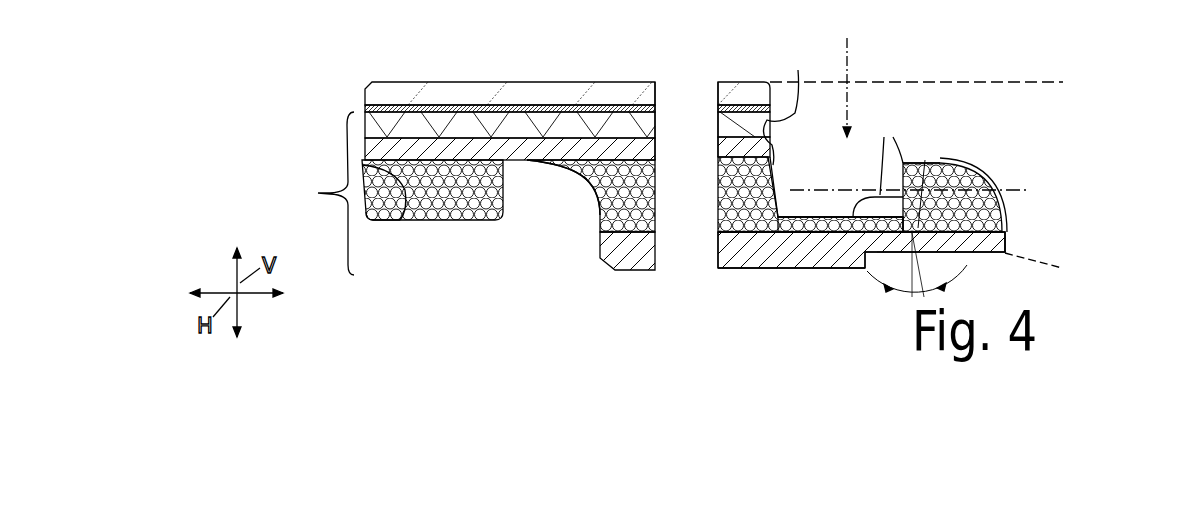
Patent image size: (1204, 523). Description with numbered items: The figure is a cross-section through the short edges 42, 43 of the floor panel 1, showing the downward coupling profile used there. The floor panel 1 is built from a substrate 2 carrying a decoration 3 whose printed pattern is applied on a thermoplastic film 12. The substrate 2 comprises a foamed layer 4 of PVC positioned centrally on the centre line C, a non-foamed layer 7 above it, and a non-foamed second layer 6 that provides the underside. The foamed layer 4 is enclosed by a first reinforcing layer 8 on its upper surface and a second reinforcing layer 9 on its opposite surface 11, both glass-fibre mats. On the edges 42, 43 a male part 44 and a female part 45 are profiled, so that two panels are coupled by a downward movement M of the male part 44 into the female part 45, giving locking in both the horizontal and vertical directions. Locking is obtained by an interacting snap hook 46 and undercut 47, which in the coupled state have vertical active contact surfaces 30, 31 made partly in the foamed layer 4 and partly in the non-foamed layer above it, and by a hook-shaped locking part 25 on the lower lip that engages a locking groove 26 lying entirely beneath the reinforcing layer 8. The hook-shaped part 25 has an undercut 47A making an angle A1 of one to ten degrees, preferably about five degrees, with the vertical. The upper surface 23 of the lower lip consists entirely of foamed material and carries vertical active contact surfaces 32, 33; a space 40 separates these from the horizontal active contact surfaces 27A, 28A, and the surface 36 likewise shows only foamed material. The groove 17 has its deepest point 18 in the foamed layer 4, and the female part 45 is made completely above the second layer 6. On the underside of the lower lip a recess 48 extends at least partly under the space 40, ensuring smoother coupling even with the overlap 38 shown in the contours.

The floor panel 1 is at (535, 78).
The substrate 2 is at (335, 193).
The decoration 3 is at (407, 107).
The foamed layer 4 is at (603, 272).
The second layer 6 is at (765, 252).
The non-foamed layer 7 is at (515, 130).
The first reinforcing layer 8 is at (623, 157).
The second reinforcing layer 9 is at (807, 240).
The opposite surface 11 is at (727, 268).
The thermoplastic film 12 is at (653, 108).
The groove 17 is at (718, 197).
The deepest point 18 is at (718, 172).
The upper surface of the lower lip 23 is at (880, 177).
The hook-shaped locking part 25 is at (953, 255).
The locking groove 26 is at (538, 198).
The horizontal active contact surface 27A is at (925, 160).
The horizontal active contact surface 28A is at (522, 185).
The vertical active contact surface 30 is at (402, 218).
The vertical active contact surface 31 is at (798, 70).
The vertical active contact surface 32 is at (787, 268).
The vertical active contact surface 33 is at (403, 215).
The surface 36 is at (862, 270).
The overlap 38 is at (948, 157).
The space 40 is at (870, 262).
The short edge 42 is at (438, 250).
The short edge 43 is at (972, 135).
The male part 44 is at (470, 255).
The female part 45 is at (878, 106).
The snap hook 46 is at (368, 222).
The undercut 47 is at (771, 167).
The undercut 47A is at (935, 167).
The recess 48 is at (1003, 253).
The downward movement M is at (849, 71).
The centre line C is at (822, 190).
The angle A1 is at (880, 300).